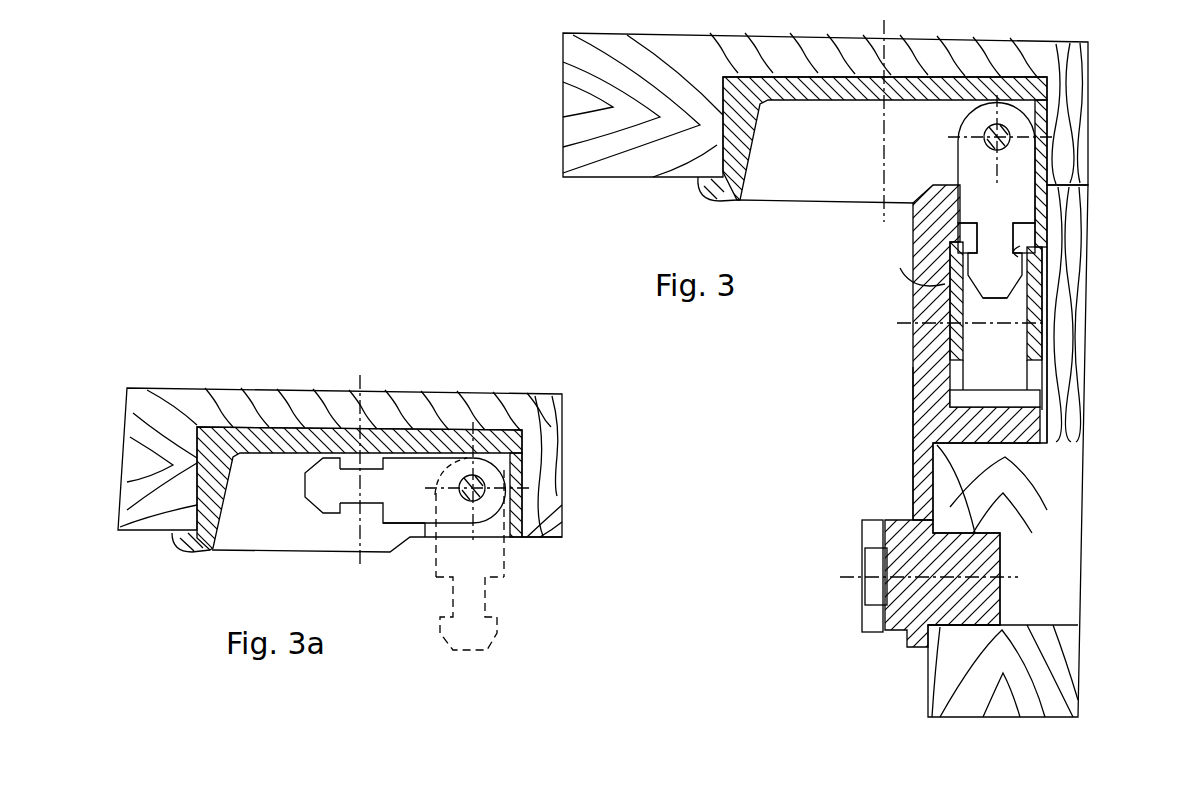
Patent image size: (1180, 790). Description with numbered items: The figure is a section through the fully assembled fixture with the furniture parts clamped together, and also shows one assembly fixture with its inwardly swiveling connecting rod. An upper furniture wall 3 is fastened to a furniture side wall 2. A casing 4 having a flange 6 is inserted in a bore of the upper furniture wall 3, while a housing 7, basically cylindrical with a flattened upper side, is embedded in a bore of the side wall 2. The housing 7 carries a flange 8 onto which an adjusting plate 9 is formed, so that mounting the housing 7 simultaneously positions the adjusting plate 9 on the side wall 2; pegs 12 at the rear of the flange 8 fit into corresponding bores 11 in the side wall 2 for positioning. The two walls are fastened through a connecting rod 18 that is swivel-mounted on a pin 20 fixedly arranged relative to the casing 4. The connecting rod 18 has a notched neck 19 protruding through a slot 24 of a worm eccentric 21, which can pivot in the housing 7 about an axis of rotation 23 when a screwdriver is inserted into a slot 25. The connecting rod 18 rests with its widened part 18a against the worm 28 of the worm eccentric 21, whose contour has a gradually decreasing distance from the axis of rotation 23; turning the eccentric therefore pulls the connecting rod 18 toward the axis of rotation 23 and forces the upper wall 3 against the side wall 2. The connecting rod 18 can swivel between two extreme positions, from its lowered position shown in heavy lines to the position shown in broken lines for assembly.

In FIG. 3, the furniture side wall 2 is at (1080, 393).
In FIG. 3, the upper furniture wall 3 is at (758, 48).
In FIG. 3A, the upper furniture wall 3 is at (297, 400).
In FIG. 3, the casing 4 is at (915, 86).
In FIG. 3A, the casing 4 is at (418, 442).
In FIG. 3, the flange 6 is at (717, 199).
In FIG. 3A, the flange 6 is at (186, 552).
In FIG. 3, the housing 7 is at (1035, 428).
In FIG. 3, the flange 8 is at (925, 477).
In FIG. 3, the adjusting plate 9 is at (896, 634).
In FIG. 3, the bores 11 is at (1003, 623).
In FIG. 3, the pegs 12 is at (990, 560).
In FIG. 3, the connecting rod 18 is at (1030, 165).
In FIG. 3A, the connecting rod 18 is at (408, 499).
In FIG. 3, the widened part 18a is at (1005, 281).
In FIG. 3, the notched neck 19 is at (1036, 229).
In FIG. 3A, the notched neck 19 is at (352, 505).
In FIG. 3, the pin 20 is at (1011, 134).
In FIG. 3A, the pin 20 is at (505, 481).
In FIG. 3, the worm eccentric 21 is at (1042, 295).
In FIG. 3, the axis of rotation 23 is at (904, 322).
In FIG. 3, the slot 24 is at (1020, 248).
In FIG. 3, the slot 25 is at (935, 331).
In FIG. 3, the worm 28 is at (910, 281).